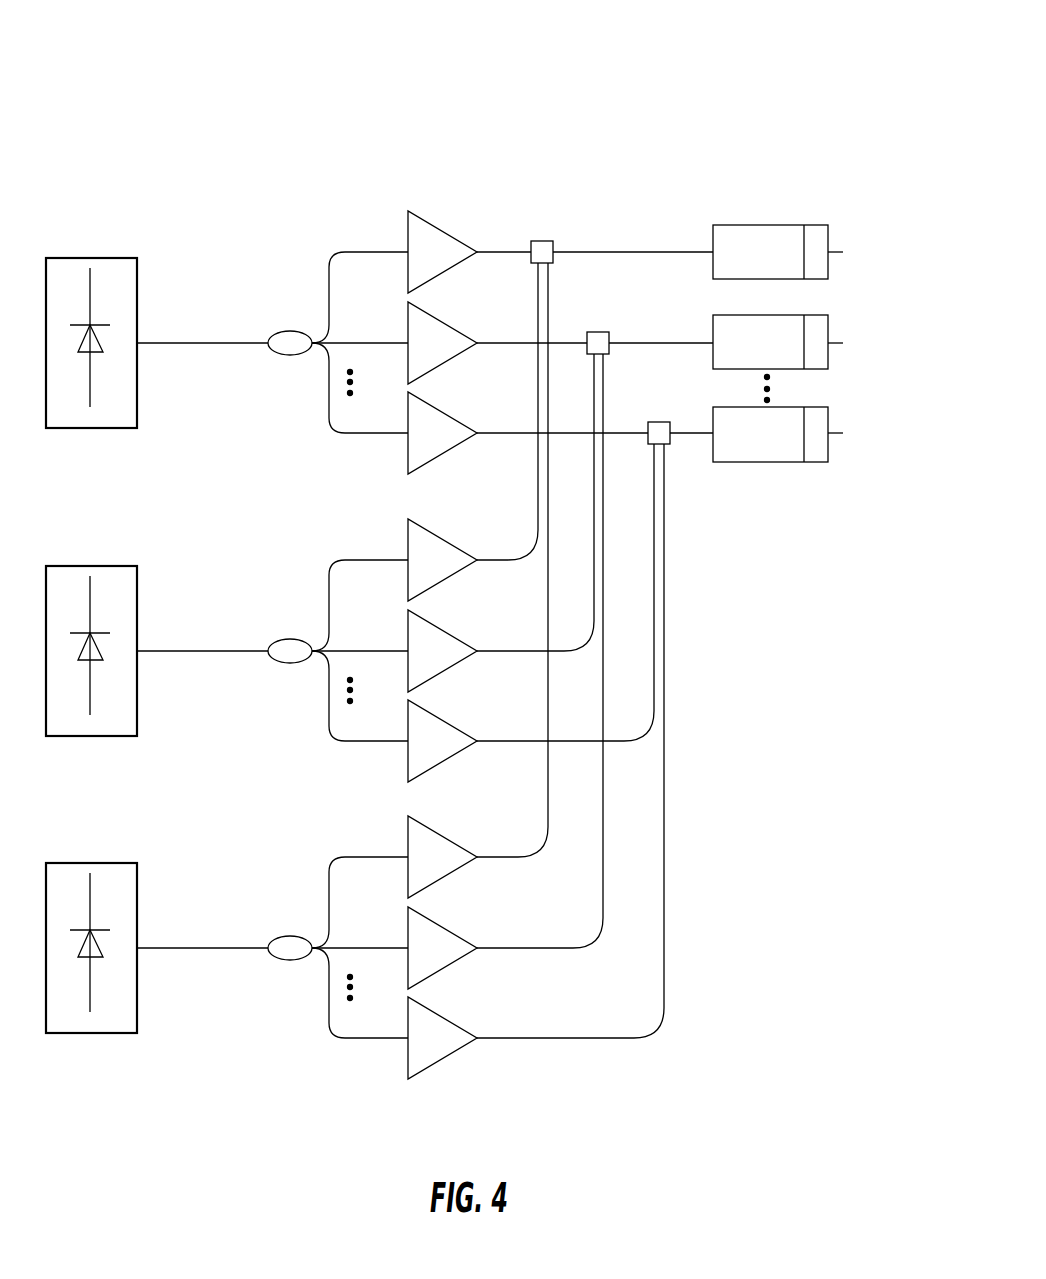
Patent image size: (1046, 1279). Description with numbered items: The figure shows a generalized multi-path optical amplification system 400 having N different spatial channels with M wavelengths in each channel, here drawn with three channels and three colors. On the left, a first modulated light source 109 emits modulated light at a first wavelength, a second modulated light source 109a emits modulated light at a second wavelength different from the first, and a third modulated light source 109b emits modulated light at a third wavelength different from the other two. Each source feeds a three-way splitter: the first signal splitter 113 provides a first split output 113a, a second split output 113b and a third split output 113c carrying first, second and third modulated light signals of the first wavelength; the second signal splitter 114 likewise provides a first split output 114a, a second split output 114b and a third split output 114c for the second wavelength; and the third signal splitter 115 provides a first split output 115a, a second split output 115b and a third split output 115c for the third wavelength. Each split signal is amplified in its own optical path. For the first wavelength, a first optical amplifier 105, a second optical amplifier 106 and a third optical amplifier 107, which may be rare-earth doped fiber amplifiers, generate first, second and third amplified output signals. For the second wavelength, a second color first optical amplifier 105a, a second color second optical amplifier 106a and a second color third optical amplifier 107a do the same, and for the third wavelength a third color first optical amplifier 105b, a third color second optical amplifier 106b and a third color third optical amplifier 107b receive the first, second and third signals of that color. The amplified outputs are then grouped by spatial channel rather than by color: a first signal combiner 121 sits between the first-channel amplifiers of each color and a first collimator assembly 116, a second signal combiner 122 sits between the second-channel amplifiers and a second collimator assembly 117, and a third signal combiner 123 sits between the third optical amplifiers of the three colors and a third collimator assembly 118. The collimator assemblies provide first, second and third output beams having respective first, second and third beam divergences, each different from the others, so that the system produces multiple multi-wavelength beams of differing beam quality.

The multi-path optical amplification system 400 is at (882, 80).
The first modulated light source 109 is at (78, 428).
The second modulated light source 109a is at (96, 645).
The third modulated light source 109b is at (96, 942).
The first signal splitter 113 is at (285, 332).
The second signal splitter 114 is at (277, 619).
The third signal splitter 115 is at (277, 916).
The first split output 113a is at (333, 257).
The second split output 113b is at (343, 343).
The third split output 113c is at (330, 418).
The first split output 114a is at (335, 579).
The second split output 114b is at (360, 623).
The third split output 114c is at (336, 715).
The first split output 115a is at (335, 876).
The second split output 115b is at (360, 919).
The third split output 115c is at (336, 1012).
The first optical amplifier 105 is at (420, 218).
The second optical amplifier 106 is at (420, 309).
The third optical amplifier 107 is at (420, 399).
The second color first optical amplifier 105a is at (457, 541).
The second color second optical amplifier 106a is at (457, 631).
The second color third optical amplifier 107a is at (457, 721).
The third color first optical amplifier 105b is at (457, 838).
The third color second optical amplifier 106b is at (457, 928).
The third color third optical amplifier 107b is at (457, 1018).
The first signal combiner 121 is at (545, 241).
The second signal combiner 122 is at (598, 332).
The third signal combiner 123 is at (659, 422).
The first collimator assembly 116 is at (788, 225).
The second collimator assembly 117 is at (788, 315).
The third collimator assembly 118 is at (787, 407).